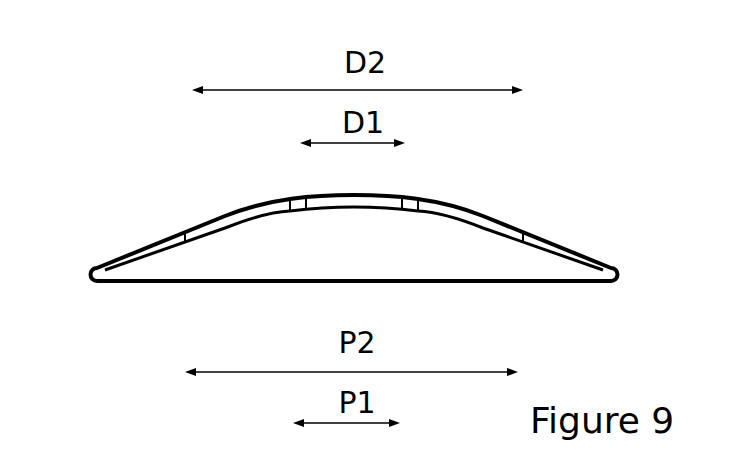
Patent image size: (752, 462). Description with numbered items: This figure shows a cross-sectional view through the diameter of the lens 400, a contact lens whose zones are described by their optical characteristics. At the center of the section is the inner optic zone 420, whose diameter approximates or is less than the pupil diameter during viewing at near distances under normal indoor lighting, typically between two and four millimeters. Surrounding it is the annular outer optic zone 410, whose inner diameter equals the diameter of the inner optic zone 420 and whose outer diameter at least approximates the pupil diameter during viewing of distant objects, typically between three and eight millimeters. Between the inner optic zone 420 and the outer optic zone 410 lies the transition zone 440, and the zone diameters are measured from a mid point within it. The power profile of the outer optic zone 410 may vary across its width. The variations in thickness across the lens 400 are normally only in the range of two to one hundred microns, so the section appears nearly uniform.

The lens 400 is at (369, 196).
The outer optic zone 410 is at (478, 224).
The inner optic zone 420 is at (355, 200).
The transition zone 440 is at (415, 212).